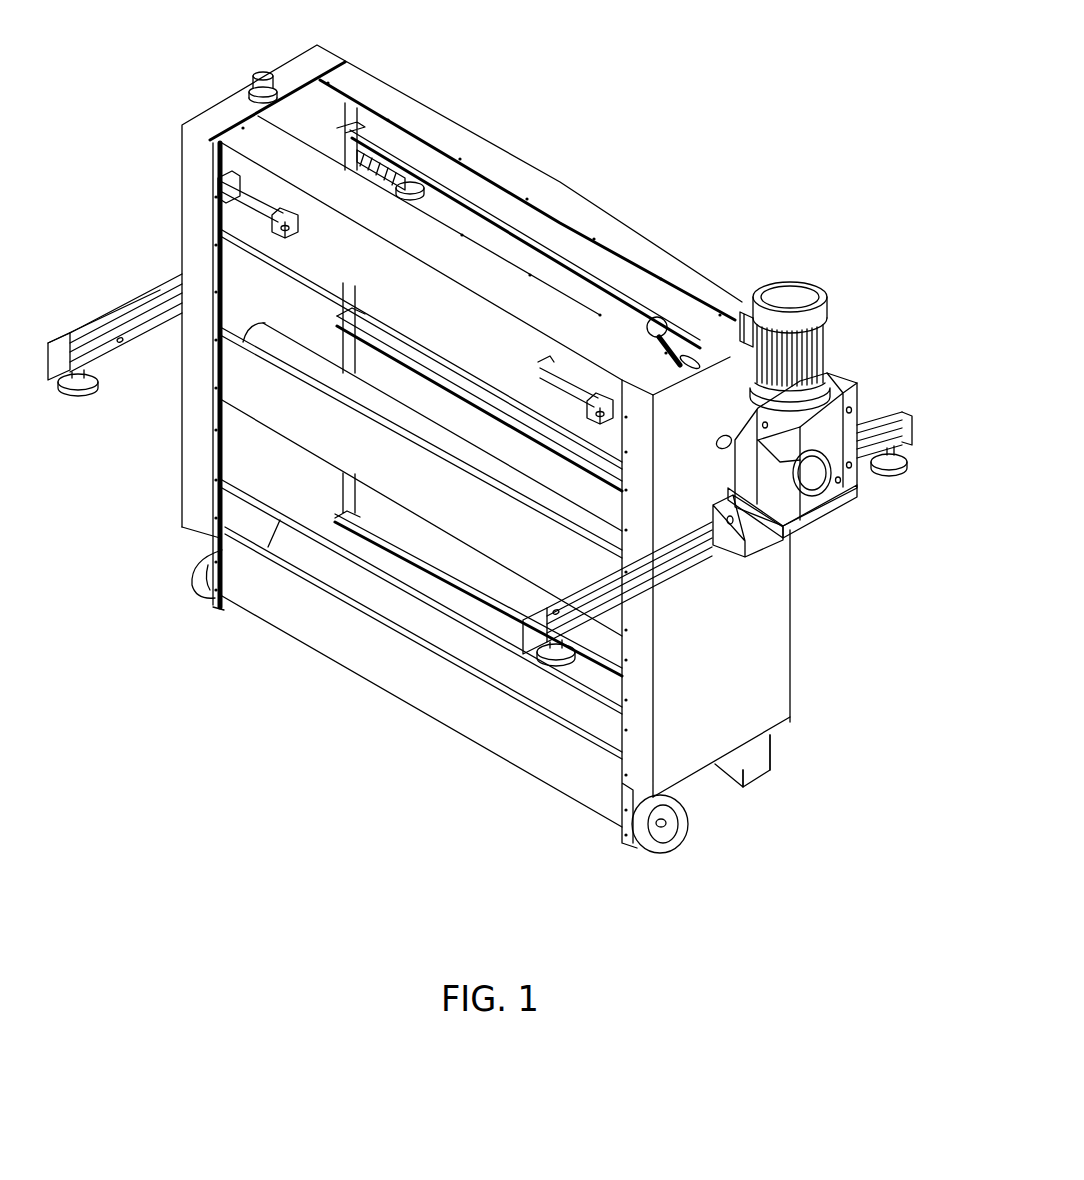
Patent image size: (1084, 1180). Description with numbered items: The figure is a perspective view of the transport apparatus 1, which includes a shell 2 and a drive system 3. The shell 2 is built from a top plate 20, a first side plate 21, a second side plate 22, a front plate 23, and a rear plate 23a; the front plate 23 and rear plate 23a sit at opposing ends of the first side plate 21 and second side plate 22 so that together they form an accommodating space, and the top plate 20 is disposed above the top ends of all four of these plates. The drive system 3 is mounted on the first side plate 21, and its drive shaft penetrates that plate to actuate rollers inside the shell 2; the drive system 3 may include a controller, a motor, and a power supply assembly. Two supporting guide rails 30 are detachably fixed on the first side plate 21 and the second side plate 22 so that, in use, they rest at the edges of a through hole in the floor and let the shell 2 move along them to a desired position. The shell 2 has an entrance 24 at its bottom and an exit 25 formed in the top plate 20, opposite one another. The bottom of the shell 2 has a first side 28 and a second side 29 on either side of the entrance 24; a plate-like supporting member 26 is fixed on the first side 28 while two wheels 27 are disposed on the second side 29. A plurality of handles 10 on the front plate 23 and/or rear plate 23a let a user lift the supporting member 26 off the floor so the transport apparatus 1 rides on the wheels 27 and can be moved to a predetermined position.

The transport apparatus 1 is at (655, 92).
The shell 2 is at (388, 82).
The drive system 3 is at (795, 283).
The handles 10 is at (237, 210).
The top plate 20 is at (437, 128).
The first side plate 21 is at (770, 598).
The second side plate 22 is at (250, 285).
The front plate 23 is at (270, 405).
The rear plate 23a is at (480, 190).
The entrance 24 is at (712, 780).
The exit 25 is at (548, 210).
The supporting member 26 is at (748, 770).
The wheels 27 is at (200, 578).
The first side 28 is at (772, 777).
The second side 29 is at (470, 748).
The supporting guide rails 30 is at (95, 322).